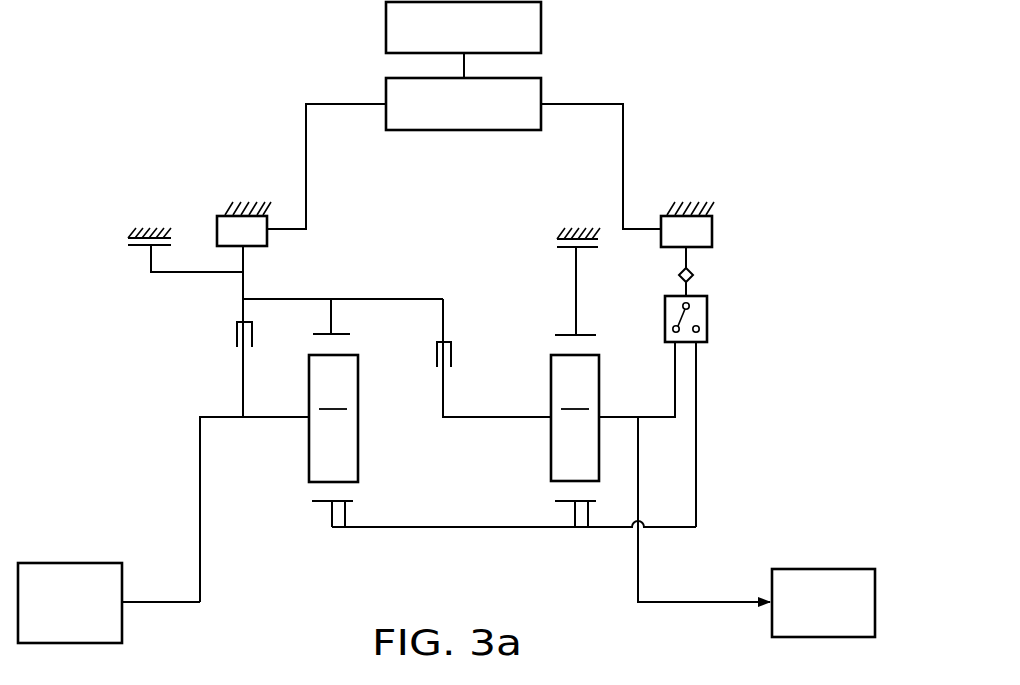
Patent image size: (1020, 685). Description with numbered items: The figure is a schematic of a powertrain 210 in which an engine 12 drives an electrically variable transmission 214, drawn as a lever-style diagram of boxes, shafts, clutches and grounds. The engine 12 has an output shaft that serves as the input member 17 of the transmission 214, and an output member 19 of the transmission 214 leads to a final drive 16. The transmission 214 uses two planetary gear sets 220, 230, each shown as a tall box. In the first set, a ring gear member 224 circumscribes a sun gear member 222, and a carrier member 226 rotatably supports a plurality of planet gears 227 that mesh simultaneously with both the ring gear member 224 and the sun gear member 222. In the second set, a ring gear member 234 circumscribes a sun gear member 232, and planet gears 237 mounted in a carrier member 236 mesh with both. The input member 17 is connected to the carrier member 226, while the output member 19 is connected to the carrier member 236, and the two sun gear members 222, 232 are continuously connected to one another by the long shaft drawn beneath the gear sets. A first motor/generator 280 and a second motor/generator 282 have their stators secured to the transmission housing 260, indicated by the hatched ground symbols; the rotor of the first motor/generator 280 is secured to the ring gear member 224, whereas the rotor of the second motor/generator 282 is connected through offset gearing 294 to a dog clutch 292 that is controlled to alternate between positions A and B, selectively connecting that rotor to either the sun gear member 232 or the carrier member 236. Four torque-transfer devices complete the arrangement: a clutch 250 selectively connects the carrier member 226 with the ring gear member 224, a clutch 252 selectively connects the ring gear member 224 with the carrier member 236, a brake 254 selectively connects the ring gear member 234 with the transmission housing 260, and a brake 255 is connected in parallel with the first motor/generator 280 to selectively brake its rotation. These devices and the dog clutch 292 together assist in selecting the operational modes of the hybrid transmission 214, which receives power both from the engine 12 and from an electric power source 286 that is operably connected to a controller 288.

The engine 12 is at (87, 546).
The final drive 16 is at (806, 554).
The input member 17 is at (160, 605).
The output member 19 is at (730, 605).
The powertrain 210 is at (117, 361).
The electrically variable transmission 214 is at (421, 252).
The first planetary gear set 220 is at (320, 504).
The sun gear member 222 is at (343, 504).
The ring gear member 224 is at (327, 332).
The carrier member 226 is at (279, 426).
The planet gears 227 is at (333, 398).
The second planetary gear set 230 is at (565, 505).
The sun gear member 232 is at (586, 505).
The ring gear member 234 is at (567, 333).
The carrier member 236 is at (587, 420).
The planet gears 237 is at (575, 398).
The clutch 250 is at (232, 338).
The clutch 252 is at (429, 363).
The brake 254 is at (549, 238).
The brake 255 is at (120, 237).
The transmission housing 260 is at (131, 234).
The first motor/generator 280 is at (214, 212).
The second motor/generator 282 is at (716, 214).
The electric power source 286 is at (386, 30).
The controller 288 is at (386, 93).
The dog clutch 292 is at (708, 320).
The offset gearing 294 is at (704, 276).